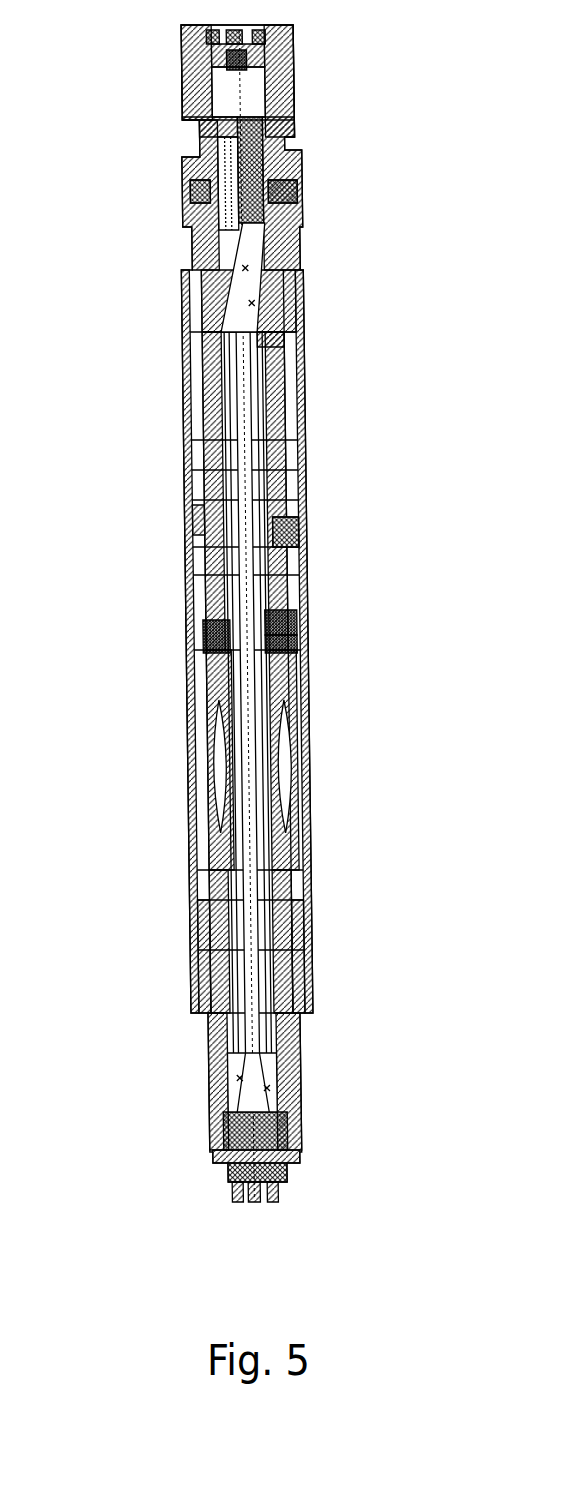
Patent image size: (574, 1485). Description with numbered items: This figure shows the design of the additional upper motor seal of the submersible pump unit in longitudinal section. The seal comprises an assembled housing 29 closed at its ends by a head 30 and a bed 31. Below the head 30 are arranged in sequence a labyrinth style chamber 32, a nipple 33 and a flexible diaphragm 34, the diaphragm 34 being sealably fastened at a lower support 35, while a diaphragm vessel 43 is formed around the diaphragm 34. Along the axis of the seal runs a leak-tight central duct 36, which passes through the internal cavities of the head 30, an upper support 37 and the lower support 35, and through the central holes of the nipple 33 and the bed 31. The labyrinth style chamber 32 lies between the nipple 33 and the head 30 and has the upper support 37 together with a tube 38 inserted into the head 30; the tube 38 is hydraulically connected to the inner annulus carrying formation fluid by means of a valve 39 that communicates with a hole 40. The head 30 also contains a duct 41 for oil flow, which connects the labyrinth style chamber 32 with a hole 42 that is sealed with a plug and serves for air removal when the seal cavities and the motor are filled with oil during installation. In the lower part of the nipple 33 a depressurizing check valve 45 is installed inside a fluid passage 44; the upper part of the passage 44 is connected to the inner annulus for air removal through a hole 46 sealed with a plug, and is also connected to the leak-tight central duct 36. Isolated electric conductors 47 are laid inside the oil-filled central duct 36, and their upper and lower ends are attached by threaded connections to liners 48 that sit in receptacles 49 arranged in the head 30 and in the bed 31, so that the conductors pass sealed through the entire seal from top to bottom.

The assembled housing 29 is at (200, 858).
The head 30 is at (192, 147).
The bed 31 is at (195, 952).
The labyrinth style chamber 32 is at (285, 373).
The nipple 33 is at (186, 552).
The flexible diaphragm 34 is at (185, 742).
The lower support 35 is at (303, 840).
The leak-tight central duct 36 is at (308, 953).
The upper support 37 is at (272, 348).
The tube 38 is at (187, 360).
The valve 39 is at (203, 518).
The hole 40 is at (178, 185).
The duct 41 is at (300, 243).
The hole 42 is at (300, 162).
The diaphragm vessel 43 is at (310, 717).
The fluid passage 44 is at (378, 630).
The depressurizing check valve 45 is at (307, 643).
The hole 46 is at (303, 522).
The isolated electric conductors 47 is at (192, 323).
The liners 48 is at (287, 122).
The receptacles 49 is at (200, 113).